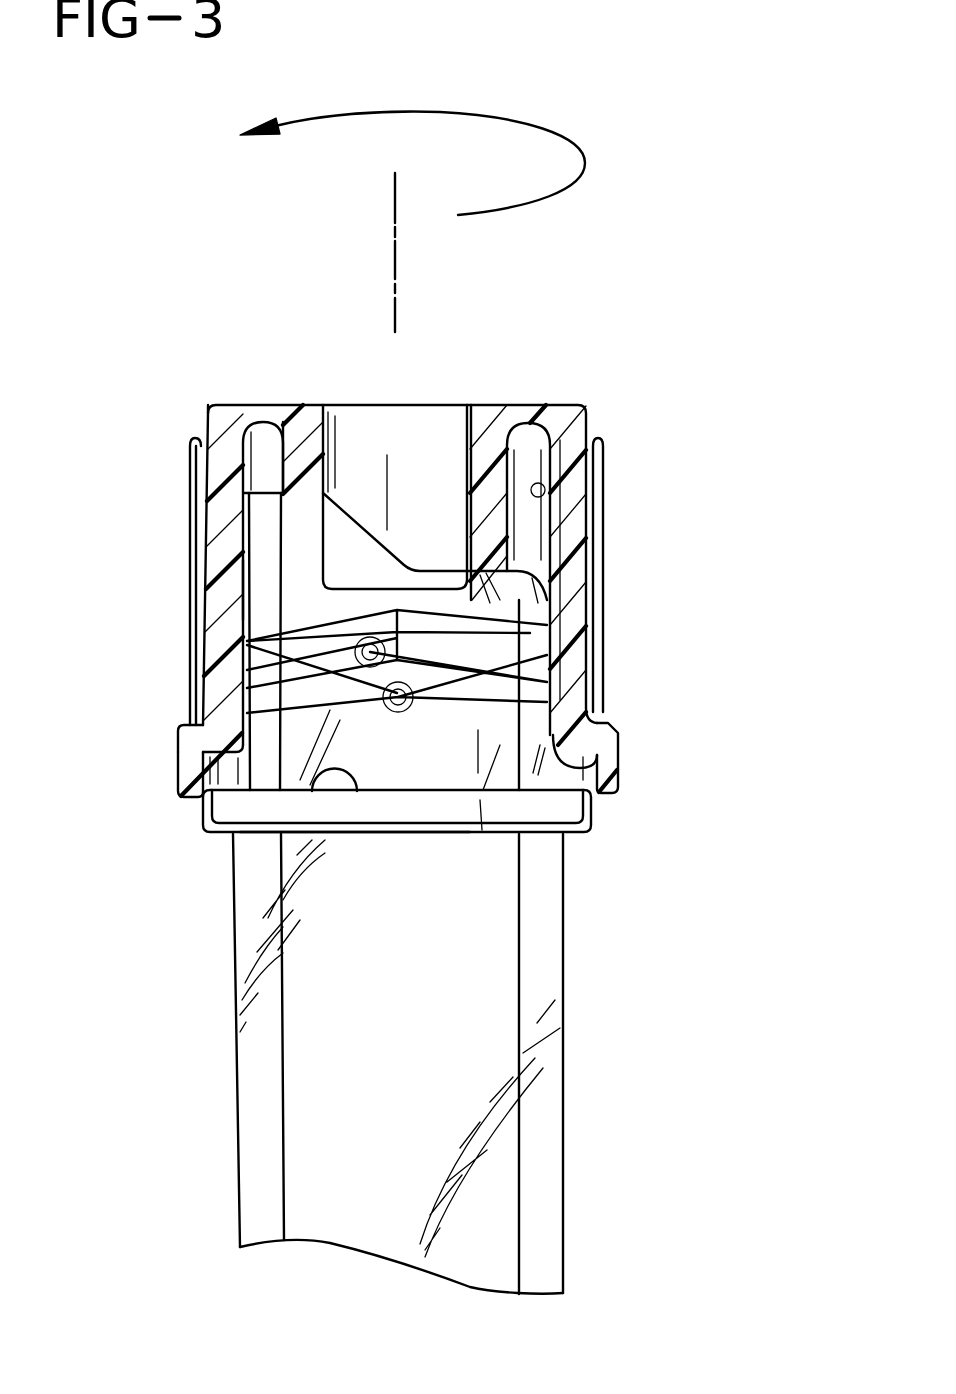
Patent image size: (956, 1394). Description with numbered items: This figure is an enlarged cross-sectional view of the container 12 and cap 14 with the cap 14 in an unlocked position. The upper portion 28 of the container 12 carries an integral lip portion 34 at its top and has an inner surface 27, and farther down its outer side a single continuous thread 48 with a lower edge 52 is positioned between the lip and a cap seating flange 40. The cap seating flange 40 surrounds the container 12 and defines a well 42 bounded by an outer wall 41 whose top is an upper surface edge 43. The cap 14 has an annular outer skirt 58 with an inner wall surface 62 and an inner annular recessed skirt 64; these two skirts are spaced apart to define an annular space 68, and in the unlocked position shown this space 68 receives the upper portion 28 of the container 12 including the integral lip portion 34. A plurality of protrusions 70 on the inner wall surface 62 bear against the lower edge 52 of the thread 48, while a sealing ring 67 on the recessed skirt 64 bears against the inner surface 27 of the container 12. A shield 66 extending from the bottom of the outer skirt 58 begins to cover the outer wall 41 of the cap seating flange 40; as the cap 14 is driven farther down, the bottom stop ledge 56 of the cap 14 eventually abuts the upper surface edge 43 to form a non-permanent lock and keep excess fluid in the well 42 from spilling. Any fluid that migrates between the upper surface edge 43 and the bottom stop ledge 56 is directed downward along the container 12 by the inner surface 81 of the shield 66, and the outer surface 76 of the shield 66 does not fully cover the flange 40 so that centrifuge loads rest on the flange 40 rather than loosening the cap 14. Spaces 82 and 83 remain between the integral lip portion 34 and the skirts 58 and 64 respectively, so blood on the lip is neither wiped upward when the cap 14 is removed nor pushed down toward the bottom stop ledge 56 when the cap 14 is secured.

The container 12 is at (563, 1123).
The cap 14 is at (597, 517).
The inner surface 27 is at (490, 776).
The upper portion 28 is at (258, 527).
The integral lip portion 34 is at (250, 505).
The cap seating flange 40 is at (207, 814).
The outer wall 41 is at (597, 820).
The well 42 is at (570, 803).
The upper surface edge 43 is at (332, 768).
The single continuous thread 48 is at (232, 714).
The lower edge 52 is at (255, 690).
The bottom stop ledge 56 is at (200, 775).
The annular outer skirt 58 is at (585, 445).
The inner wall surface 62 is at (546, 496).
The inner annular recessed skirt 64 is at (487, 443).
The shield 66 is at (607, 757).
The sealing ring 67 is at (507, 610).
The annular space 68 is at (523, 442).
The protrusions 70 is at (550, 668).
The outer surface 76 is at (182, 752).
The inner surface 81 is at (600, 710).
The space 82 is at (262, 548).
The space 83 is at (250, 583).